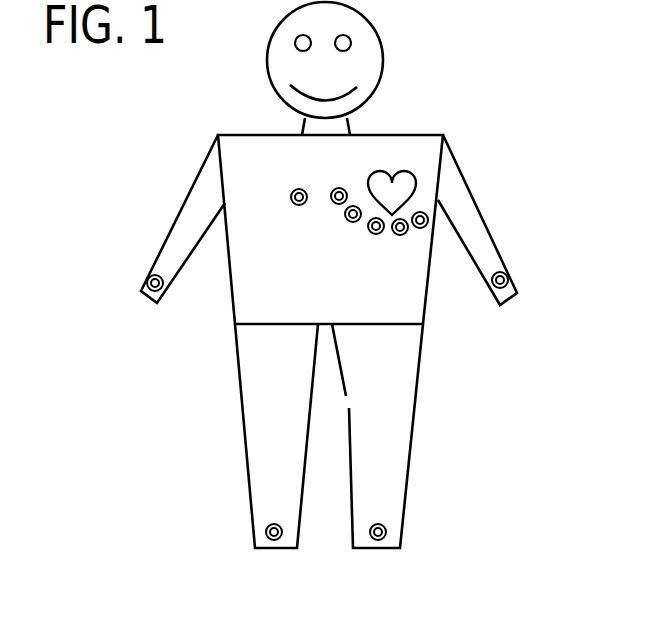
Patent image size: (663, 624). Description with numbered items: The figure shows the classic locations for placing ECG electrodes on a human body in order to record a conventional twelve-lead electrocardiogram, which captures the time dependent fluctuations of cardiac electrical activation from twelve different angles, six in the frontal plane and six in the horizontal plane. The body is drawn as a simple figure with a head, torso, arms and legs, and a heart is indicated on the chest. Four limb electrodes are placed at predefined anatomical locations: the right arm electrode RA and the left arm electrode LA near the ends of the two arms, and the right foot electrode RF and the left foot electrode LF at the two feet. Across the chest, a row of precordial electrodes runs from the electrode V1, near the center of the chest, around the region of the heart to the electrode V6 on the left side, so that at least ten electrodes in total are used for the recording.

The electrode V1 is at (298, 213).
The electrode V6 is at (411, 238).
The right arm electrode RA is at (130, 275).
The left arm electrode LA is at (525, 275).
The right foot electrode RF is at (242, 533).
The left foot electrode LF is at (409, 533).